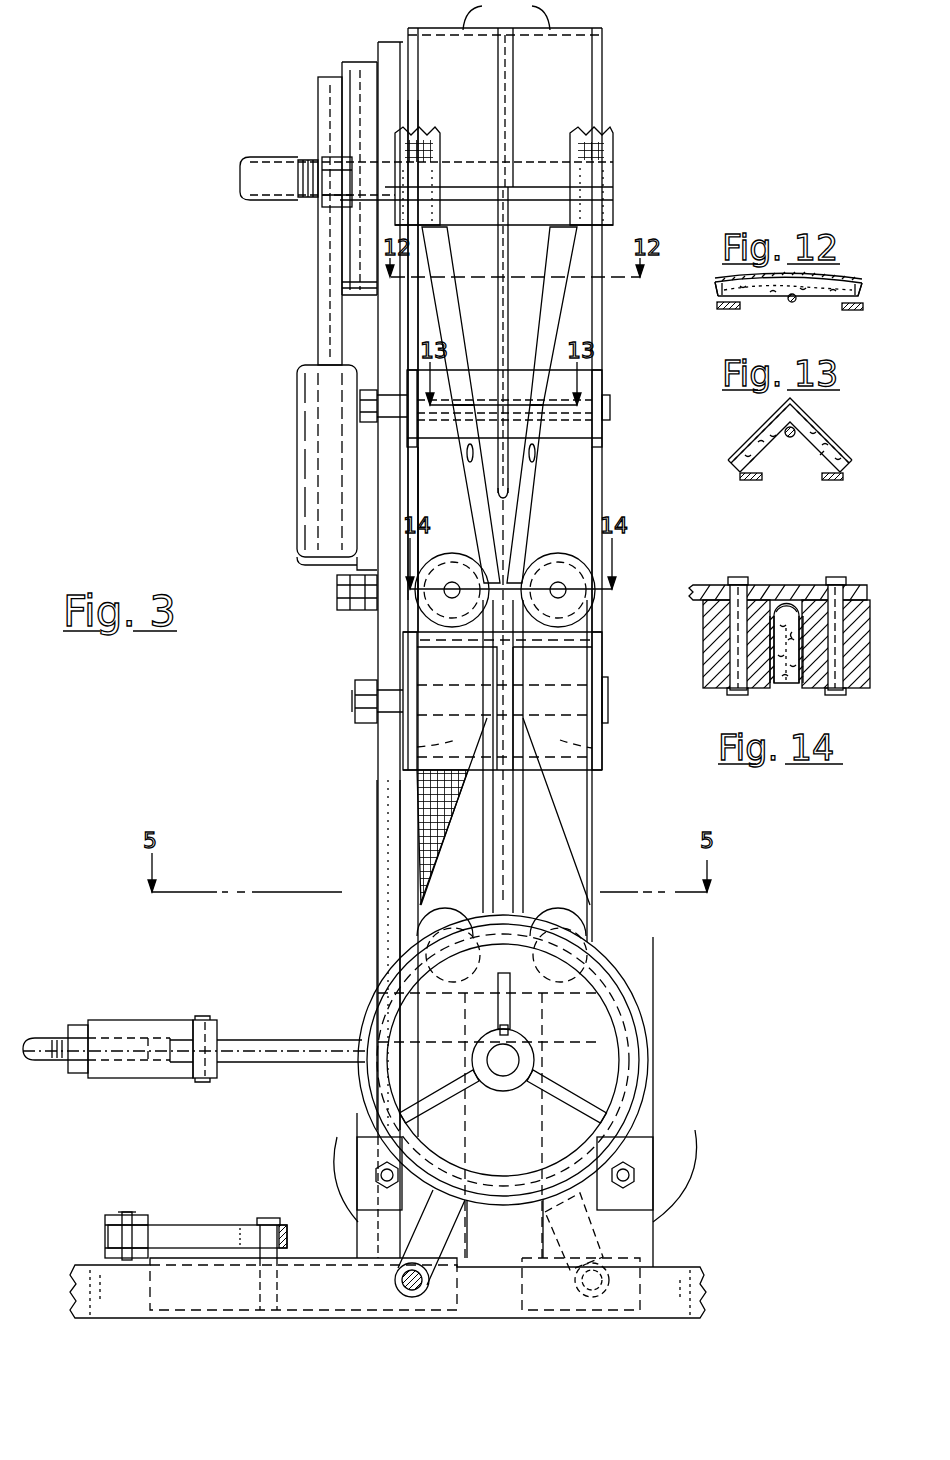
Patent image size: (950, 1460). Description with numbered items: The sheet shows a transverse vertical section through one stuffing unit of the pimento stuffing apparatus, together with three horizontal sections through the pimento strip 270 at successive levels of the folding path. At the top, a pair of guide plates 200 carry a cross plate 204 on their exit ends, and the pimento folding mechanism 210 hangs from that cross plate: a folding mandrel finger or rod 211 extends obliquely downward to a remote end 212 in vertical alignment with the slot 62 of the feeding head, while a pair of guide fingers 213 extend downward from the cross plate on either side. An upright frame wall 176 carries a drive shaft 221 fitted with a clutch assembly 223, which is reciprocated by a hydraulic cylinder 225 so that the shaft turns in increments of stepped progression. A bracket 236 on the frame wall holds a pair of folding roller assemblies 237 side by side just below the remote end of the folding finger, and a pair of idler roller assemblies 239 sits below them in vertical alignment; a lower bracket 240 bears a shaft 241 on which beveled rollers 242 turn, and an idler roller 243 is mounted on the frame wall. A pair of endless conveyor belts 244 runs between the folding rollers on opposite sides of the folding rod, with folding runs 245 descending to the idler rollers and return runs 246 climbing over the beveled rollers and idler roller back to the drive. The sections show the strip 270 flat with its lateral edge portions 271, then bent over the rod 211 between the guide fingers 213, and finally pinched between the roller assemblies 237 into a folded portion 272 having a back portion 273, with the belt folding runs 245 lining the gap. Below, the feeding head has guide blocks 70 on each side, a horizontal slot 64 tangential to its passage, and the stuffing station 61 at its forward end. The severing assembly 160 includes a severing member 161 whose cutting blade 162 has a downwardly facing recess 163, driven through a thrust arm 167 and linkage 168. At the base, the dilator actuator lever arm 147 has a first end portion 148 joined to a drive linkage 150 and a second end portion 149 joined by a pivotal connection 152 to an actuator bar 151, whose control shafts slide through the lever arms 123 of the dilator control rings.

In FIG. 3, the inserting or stuffing station 61 is at (499, 1088).
In FIG. 3, the slot 62 is at (477, 970).
In FIG. 3, the slot 64 is at (627, 978).
In FIG. 3, the guide blocks 70 is at (370, 1127).
In FIG. 3, the lever arm 123 is at (440, 1234).
In FIG. 3, the lever arm 147 is at (213, 1226).
In FIG. 3, the first end portion 148 is at (140, 1237).
In FIG. 3, the second end portion 149 is at (288, 1232).
In FIG. 3, the drive linkage 150 is at (118, 1212).
In FIG. 3, the actuator bar 151 is at (423, 1302).
In FIG. 3, the pivotal connection 152 is at (273, 1217).
In FIG. 3, the slicing or severing assembly 160 is at (173, 983).
In FIG. 3, the severing members 161 is at (252, 1052).
In FIG. 3, the cutting blade 162 is at (487, 1020).
In FIG. 3, the downwardly facing recess 163 is at (480, 1078).
In FIG. 3, the thrust arm 167 is at (37, 1058).
In FIG. 3, the linkage 168 is at (153, 1076).
In FIG. 3, the upright frame wall 176 is at (368, 775).
In FIG. 3, the guide plates 200 is at (570, 147).
In FIG. 3, the cross plate 204 is at (545, 213).
In FIG. 3, the pimento folding mechanism 210 is at (420, 333).
In FIG. 3, the folding mandrel finger or rod 211 is at (503, 343).
In FIG. 12, the folding mandrel finger or rod 211 is at (793, 302).
In FIG. 13, the folding mandrel finger or rod 211 is at (793, 438).
In FIG. 3, the remote end 212 is at (503, 480).
In FIG. 3, the guide fingers 213 is at (563, 267).
In FIG. 12, the guide fingers 213 is at (727, 308).
In FIG. 13, the guide fingers 213 is at (745, 482).
In FIG. 3, the drive shaft 221 is at (277, 164).
In FIG. 3, the clutch assembly 223 is at (337, 72).
In FIG. 3, the hydraulic cylinder 225 is at (296, 450).
In FIG. 3, the bracket 236 is at (423, 550).
In FIG. 14, the bracket 236 is at (853, 585).
In FIG. 3, the folding roller assemblies 237 is at (543, 607).
In FIG. 14, the folding roller assemblies 237 is at (712, 655).
In FIG. 3, the idler roller assemblies 239 is at (547, 910).
In FIG. 3, the bracket 240 is at (380, 670).
In FIG. 3, the shaft 241 is at (373, 752).
In FIG. 3, the beveled rollers 242 is at (605, 745).
In FIG. 3, the idler roller 243 is at (585, 390).
In FIG. 3, the endless conveyor belts 244 is at (506, 15).
In FIG. 3, the folding runs 245 is at (537, 522).
In FIG. 12, the folding runs 245 is at (848, 277).
In FIG. 13, the folding runs 245 is at (772, 423).
In FIG. 14, the folding runs 245 is at (803, 640).
In FIG. 3, the return runs 246 is at (457, 481).
In FIG. 3, the pimento strip 270 is at (508, 832).
In FIG. 12, the pimento strip 270 is at (757, 299).
In FIG. 13, the pimento strip 270 is at (767, 453).
In FIG. 12, the lateral edge portions 271 is at (725, 289).
In FIG. 14, the folded portion 272 is at (785, 683).
In FIG. 14, the back portion 273 is at (790, 604).